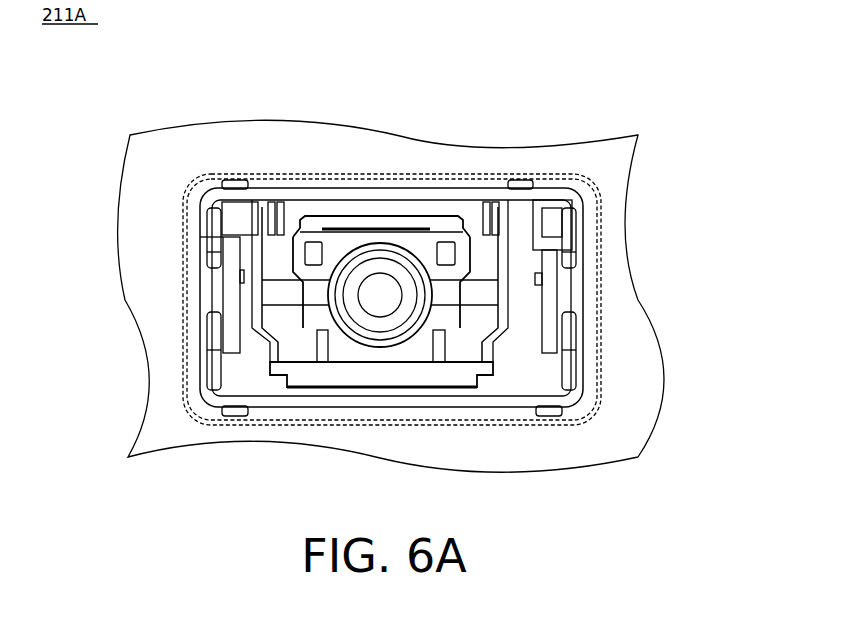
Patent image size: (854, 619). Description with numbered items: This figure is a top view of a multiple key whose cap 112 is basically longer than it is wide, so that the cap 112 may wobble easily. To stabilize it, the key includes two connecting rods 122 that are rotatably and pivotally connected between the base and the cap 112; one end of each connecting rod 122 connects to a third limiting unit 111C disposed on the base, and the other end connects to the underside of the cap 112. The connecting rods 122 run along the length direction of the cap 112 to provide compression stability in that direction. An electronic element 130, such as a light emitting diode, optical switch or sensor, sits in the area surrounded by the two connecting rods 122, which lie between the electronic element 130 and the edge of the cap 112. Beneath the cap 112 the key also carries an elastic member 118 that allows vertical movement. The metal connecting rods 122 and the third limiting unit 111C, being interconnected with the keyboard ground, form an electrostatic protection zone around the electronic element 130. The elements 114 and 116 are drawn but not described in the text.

The cap 112 is at (602, 211).
The frame 114 is at (468, 220).
The switch body 116 is at (338, 247).
The elastic member 118 is at (376, 292).
The connecting rods 122 is at (263, 193).
The electronic element 130 is at (551, 218).
The third limiting unit 111C is at (550, 298).